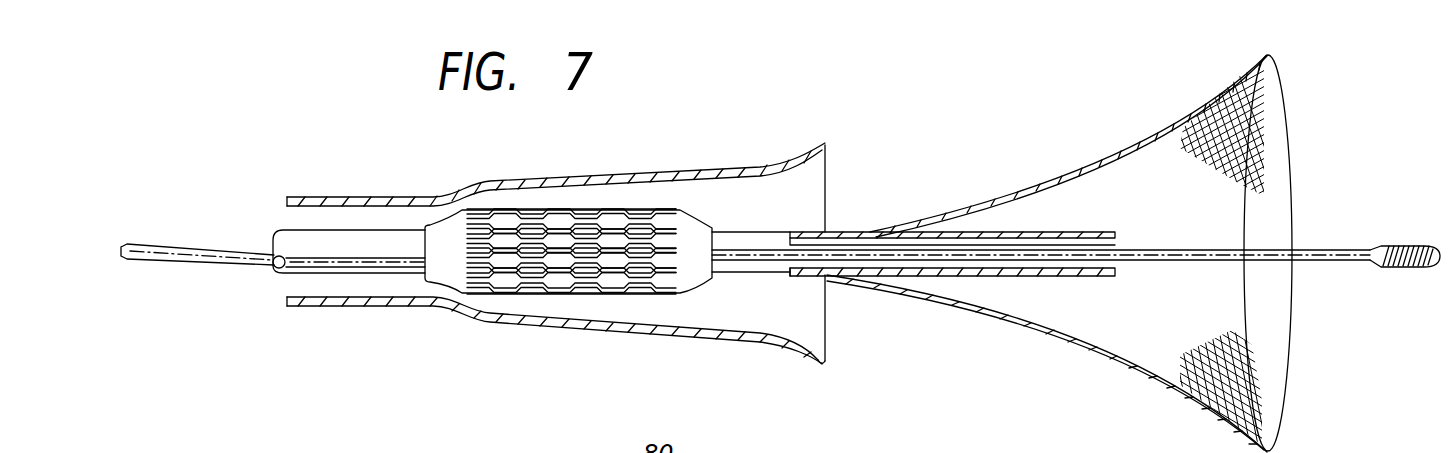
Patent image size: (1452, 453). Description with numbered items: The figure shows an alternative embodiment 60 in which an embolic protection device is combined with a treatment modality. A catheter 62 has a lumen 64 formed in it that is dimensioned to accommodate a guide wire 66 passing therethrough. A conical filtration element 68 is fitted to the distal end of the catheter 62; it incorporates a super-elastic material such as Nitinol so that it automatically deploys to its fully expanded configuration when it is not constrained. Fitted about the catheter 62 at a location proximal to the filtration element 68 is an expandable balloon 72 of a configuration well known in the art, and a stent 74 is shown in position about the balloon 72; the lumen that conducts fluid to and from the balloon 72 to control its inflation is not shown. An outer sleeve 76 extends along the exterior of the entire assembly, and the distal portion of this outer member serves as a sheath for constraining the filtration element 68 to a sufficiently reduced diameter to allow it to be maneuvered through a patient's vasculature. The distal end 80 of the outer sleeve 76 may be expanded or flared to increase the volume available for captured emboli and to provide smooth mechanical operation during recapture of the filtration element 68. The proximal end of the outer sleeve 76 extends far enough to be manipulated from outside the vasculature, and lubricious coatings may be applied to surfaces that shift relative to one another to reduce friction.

The alternative embodiment 60 is at (752, 120).
The catheter 62 is at (380, 263).
The lumen 64 is at (260, 264).
The guide wire 66 is at (1343, 249).
The conical filtration element 68 is at (1227, 127).
The expandable balloon 72 is at (458, 275).
The stent 74 is at (553, 280).
The outer sleeve 76 is at (344, 199).
The distal end of the outer sleeve 80 is at (826, 143).